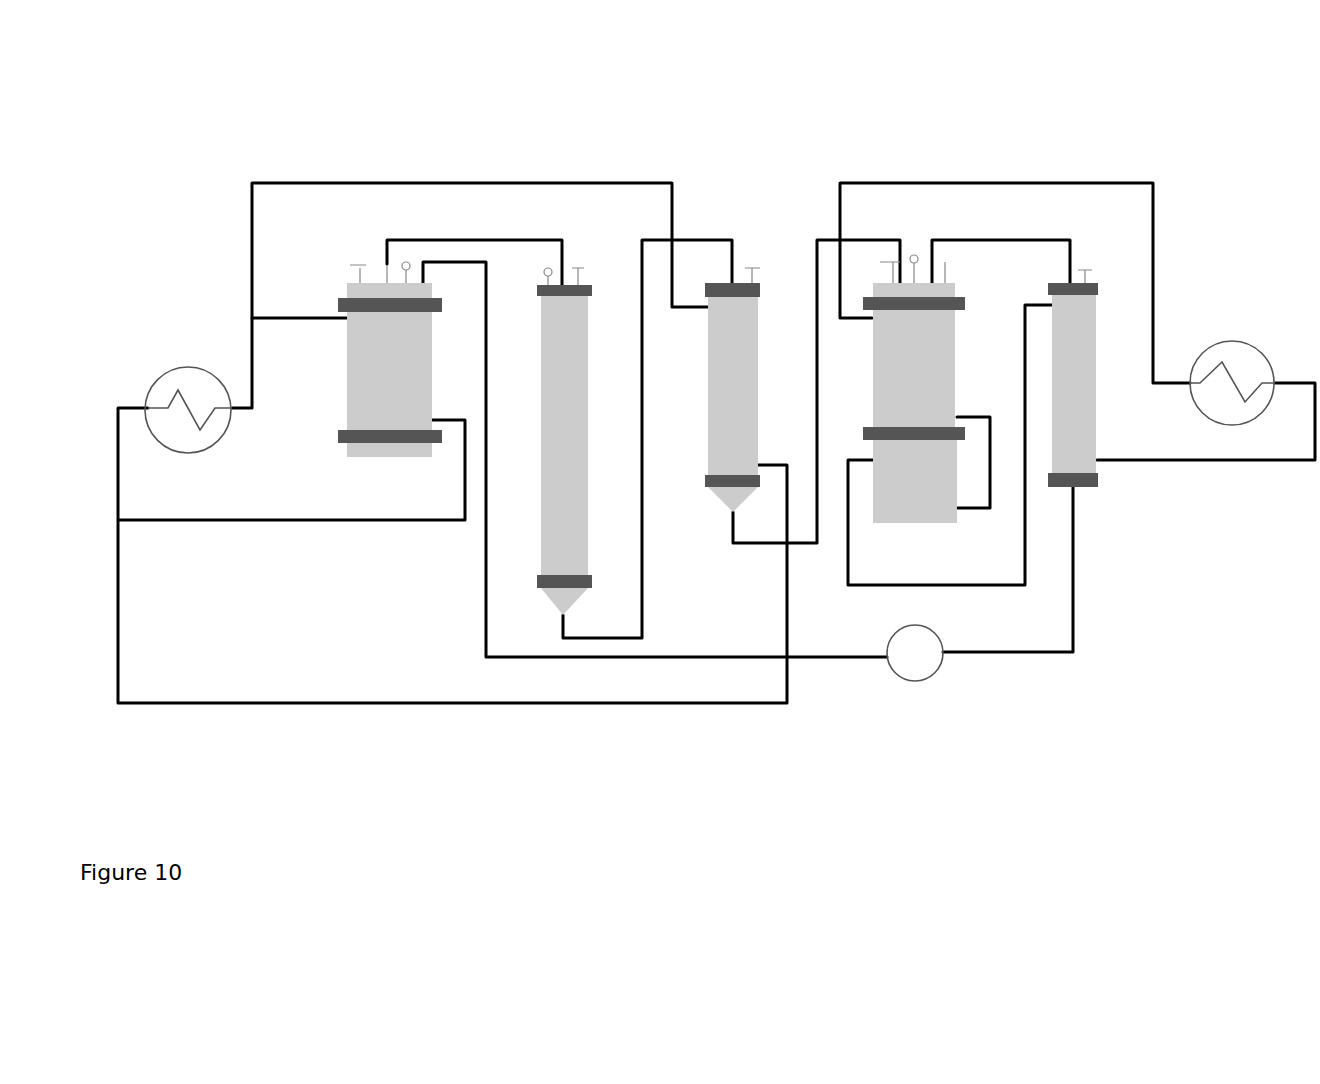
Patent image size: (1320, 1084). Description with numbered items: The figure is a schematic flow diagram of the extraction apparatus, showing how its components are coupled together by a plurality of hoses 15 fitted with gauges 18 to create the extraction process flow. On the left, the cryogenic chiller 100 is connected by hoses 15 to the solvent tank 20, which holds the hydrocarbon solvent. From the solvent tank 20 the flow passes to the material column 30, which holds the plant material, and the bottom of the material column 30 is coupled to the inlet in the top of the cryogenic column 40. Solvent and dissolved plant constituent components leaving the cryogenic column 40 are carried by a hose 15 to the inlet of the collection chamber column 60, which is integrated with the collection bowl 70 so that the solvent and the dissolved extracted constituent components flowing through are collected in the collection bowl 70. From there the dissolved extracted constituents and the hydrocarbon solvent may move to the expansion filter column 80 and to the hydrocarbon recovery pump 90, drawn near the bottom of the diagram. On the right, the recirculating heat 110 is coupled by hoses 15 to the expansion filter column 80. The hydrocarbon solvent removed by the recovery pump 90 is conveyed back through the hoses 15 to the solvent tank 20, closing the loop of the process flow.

The hose 15 is at (637, 180).
The gauge 18 is at (408, 261).
The solvent tank 20 is at (345, 393).
The material column 30 is at (578, 368).
The cryogenic column 40 is at (748, 355).
The collection chamber column 60 is at (955, 350).
The collection bowl 70 is at (909, 527).
The expansion filter column 80 is at (1093, 338).
The recovery pump 90 is at (938, 640).
The cryogenic chiller 100 is at (156, 381).
The recirculating heat 110 is at (1248, 345).